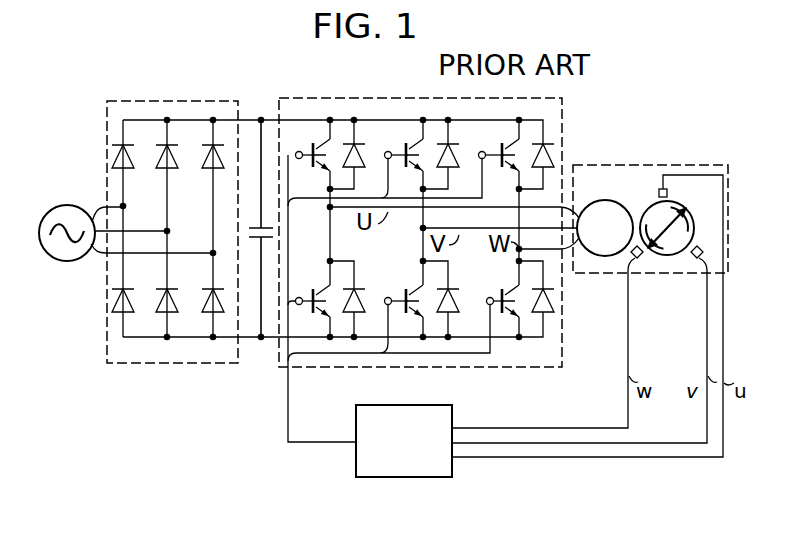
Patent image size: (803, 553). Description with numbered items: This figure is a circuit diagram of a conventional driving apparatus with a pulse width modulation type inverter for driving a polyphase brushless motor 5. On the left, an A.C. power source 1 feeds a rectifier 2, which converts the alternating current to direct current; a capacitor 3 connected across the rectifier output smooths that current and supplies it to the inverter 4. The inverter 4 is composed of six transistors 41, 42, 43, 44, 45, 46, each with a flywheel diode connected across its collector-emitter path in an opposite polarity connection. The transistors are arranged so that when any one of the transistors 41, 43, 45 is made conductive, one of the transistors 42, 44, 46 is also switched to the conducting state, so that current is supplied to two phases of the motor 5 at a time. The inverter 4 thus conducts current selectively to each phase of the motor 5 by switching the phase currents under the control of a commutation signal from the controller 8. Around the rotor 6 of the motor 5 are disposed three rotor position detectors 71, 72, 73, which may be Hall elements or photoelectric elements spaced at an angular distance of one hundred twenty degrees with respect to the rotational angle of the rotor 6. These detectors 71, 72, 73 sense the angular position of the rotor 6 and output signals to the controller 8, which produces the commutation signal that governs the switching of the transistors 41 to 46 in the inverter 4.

The A.C. power source 1 is at (71, 205).
The rectifier 2 is at (212, 363).
The capacitor 3 is at (254, 228).
The inverter 4 is at (527, 368).
The transistor 41 is at (312, 151).
The transistor 42 is at (319, 292).
The transistor 43 is at (402, 151).
The transistor 44 is at (398, 283).
The transistor 45 is at (498, 153).
The transistor 46 is at (498, 298).
The polyphase brushless motor 5 is at (645, 165).
The rotor 6 is at (659, 254).
The rotor position detector 71 is at (668, 193).
The rotor position detector 72 is at (696, 259).
The rotor position detector 73 is at (639, 259).
The controller 8 is at (428, 477).